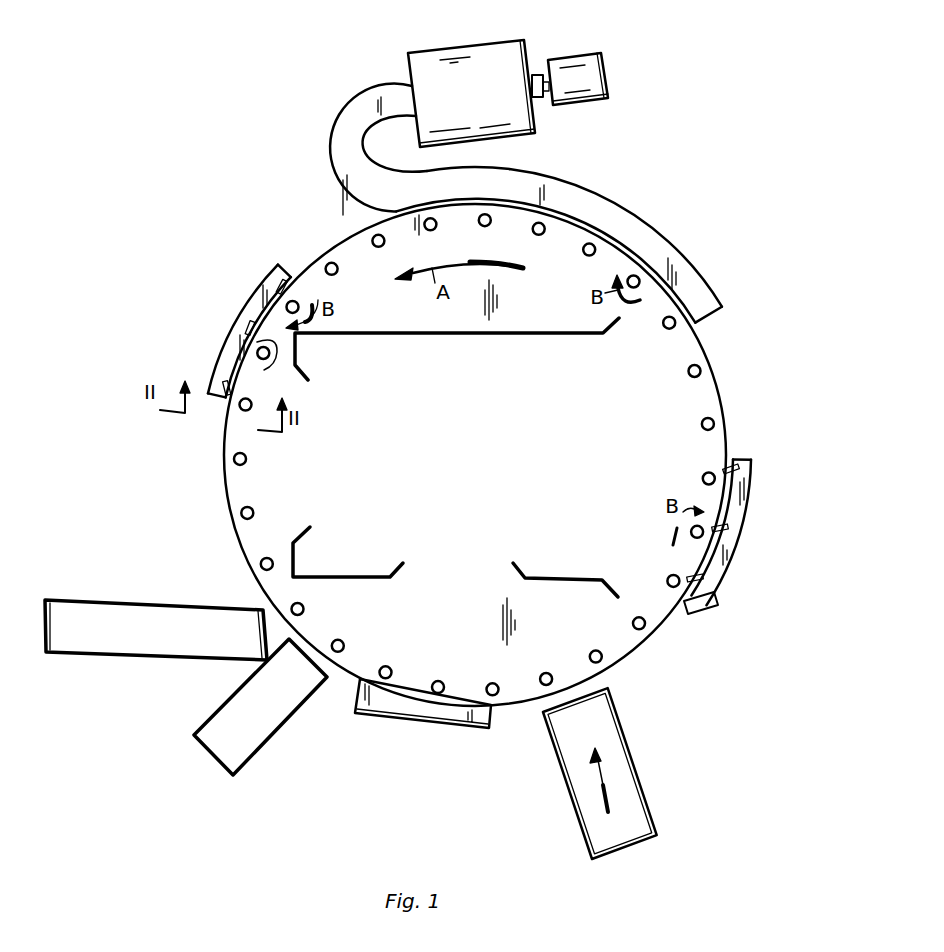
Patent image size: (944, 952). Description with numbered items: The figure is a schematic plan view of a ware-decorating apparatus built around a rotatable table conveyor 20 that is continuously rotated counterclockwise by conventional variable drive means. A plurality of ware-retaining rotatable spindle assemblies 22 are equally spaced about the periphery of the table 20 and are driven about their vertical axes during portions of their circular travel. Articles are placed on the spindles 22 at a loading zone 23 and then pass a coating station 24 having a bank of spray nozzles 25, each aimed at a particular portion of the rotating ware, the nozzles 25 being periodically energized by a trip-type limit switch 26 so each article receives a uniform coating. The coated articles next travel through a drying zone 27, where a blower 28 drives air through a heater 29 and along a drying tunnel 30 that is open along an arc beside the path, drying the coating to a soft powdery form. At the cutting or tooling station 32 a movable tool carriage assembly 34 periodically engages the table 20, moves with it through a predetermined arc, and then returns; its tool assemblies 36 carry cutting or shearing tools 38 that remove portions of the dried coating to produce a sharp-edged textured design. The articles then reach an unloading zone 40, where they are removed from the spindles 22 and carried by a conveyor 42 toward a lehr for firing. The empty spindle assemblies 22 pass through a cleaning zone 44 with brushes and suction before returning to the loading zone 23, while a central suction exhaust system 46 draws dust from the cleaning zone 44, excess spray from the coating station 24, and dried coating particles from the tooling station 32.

The rotatable table conveyor 20 is at (724, 402).
The ware-retaining rotatable spindle assemblies 22 is at (706, 420).
The loading zone 23 is at (615, 710).
The coating station 24 is at (743, 498).
The spray nozzles 25 is at (740, 467).
The trip-type limit switch 26 is at (713, 603).
The drying zone 27 is at (667, 238).
The blower 28 is at (597, 60).
The heater 29 is at (462, 53).
The drying tunnel 30 is at (498, 172).
The cutting or tooling station 32 is at (219, 344).
The movable tool carriage assembly 34 is at (257, 292).
The tool assemblies 36 is at (273, 278).
The cutting or shearing tools 38 is at (248, 398).
The unloading zone 40 is at (287, 723).
The conveyor 42 is at (153, 601).
The cleaning zone 44 is at (458, 727).
The central suction exhaust system 46 is at (592, 337).